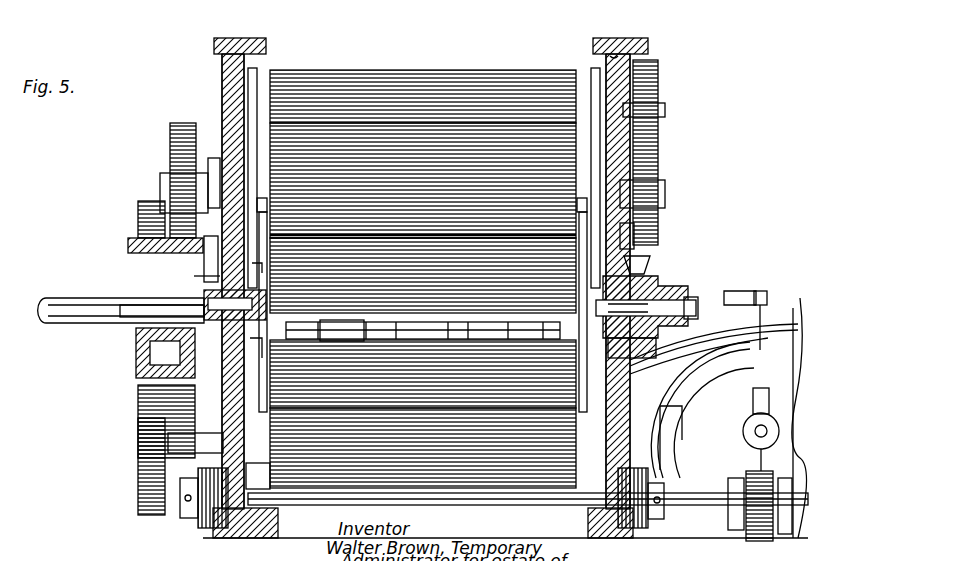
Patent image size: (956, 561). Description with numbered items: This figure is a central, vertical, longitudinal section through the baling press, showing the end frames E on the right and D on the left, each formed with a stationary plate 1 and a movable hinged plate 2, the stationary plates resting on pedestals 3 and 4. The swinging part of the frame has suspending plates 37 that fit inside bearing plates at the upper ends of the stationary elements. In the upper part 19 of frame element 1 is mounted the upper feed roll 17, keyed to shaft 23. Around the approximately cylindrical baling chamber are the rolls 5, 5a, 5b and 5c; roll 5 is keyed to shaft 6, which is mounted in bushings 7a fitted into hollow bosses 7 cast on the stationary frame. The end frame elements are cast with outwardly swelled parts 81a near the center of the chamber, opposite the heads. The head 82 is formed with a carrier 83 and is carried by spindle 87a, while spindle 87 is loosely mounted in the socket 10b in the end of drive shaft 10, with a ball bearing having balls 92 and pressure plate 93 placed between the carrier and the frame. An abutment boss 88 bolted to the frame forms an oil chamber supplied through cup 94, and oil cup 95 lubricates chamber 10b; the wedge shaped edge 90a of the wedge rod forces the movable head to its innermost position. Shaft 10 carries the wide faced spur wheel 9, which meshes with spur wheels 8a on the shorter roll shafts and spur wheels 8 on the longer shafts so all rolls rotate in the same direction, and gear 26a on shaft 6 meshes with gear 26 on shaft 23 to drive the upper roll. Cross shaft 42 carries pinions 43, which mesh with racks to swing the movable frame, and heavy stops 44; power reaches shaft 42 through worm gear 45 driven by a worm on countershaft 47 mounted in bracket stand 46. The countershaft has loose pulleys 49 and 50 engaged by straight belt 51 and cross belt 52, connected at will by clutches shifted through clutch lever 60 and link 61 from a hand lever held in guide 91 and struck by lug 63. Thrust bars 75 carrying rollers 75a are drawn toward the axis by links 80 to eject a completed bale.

The stationary plate 1 is at (598, 148).
The movable hinged plate 2 is at (220, 100).
The legs or pedestals 3 is at (580, 522).
The legs or pedestals 4 is at (250, 522).
The roll 5 is at (423, 180).
The roll 5a is at (423, 275).
The roll 5b is at (423, 374).
The roll 5c is at (423, 448).
The shaft 6 is at (658, 186).
The hollow boss 7 is at (232, 165).
The bushing 7a is at (226, 190).
The spur wheel 8 is at (130, 200).
The spur wheel 8a is at (162, 142).
The spur wheel 9 is at (140, 346).
The drive shaft 10 is at (74, 290).
The socket 10b is at (104, 312).
The upper feed roll 17 is at (478, 70).
The upper part of frame element 19 is at (255, 34).
The shaft 23 is at (658, 104).
The gear 26 is at (650, 84).
The gear 26a is at (650, 162).
The suspending plate 37 is at (250, 70).
The cross shaft 42 is at (322, 496).
The pinion 43 is at (200, 508).
The stop 44 is at (262, 470).
The worm gear 45 is at (746, 466).
The bracket stand 46 is at (746, 390).
The countershaft 47 is at (740, 418).
The loose pulley 49 is at (712, 368).
The loose pulley 50 is at (786, 322).
The straight belt 51 is at (699, 364).
The cross belt 52 is at (700, 338).
The clutch lever 60 is at (754, 284).
The link 61 is at (735, 284).
The lug 63 is at (677, 438).
The thrust bar 75 is at (468, 316).
The roller 75a is at (418, 316).
The link 80 is at (640, 232).
The outwardly swelled part 81a is at (262, 210).
The head 82 is at (262, 212).
The carrier 83 is at (544, 358).
The spindle 87 is at (250, 298).
The spindle 87a is at (583, 318).
The abutment boss 88 is at (646, 307).
The wedge shaped edge 90a is at (665, 322).
The guide 91 is at (700, 292).
The balls 92 is at (254, 340).
The pressure plate 93 is at (252, 268).
The oil cup 94 is at (642, 256).
The oil cup 95 is at (198, 260).
The end frame D is at (228, 78).
The end frame E is at (612, 48).